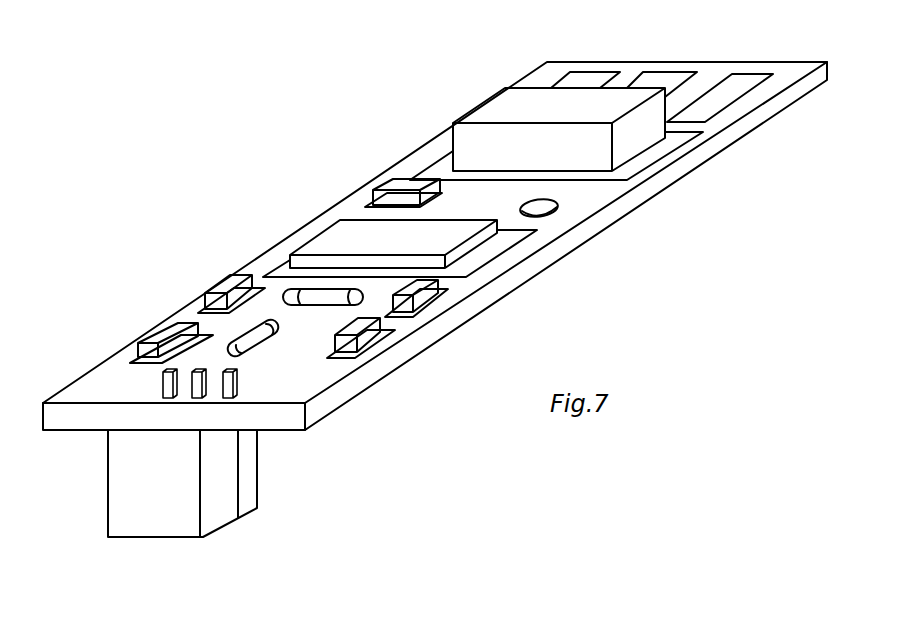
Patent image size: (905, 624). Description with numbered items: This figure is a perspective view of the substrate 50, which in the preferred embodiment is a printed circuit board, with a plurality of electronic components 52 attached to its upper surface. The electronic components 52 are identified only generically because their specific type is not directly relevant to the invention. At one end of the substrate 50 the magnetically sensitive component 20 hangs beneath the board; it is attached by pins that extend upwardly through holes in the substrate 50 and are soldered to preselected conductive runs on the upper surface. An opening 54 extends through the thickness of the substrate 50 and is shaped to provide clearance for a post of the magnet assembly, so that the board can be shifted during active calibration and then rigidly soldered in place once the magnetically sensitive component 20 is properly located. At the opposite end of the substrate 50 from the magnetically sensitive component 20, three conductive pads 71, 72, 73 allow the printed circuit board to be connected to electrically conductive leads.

The magnetically sensitive component 20 is at (117, 510).
The substrate 50 is at (590, 205).
The electronic components 52 is at (492, 110).
The opening 54 is at (262, 343).
The conductive pad 71 is at (588, 76).
The conductive pad 72 is at (670, 76).
The conductive pad 73 is at (745, 80).